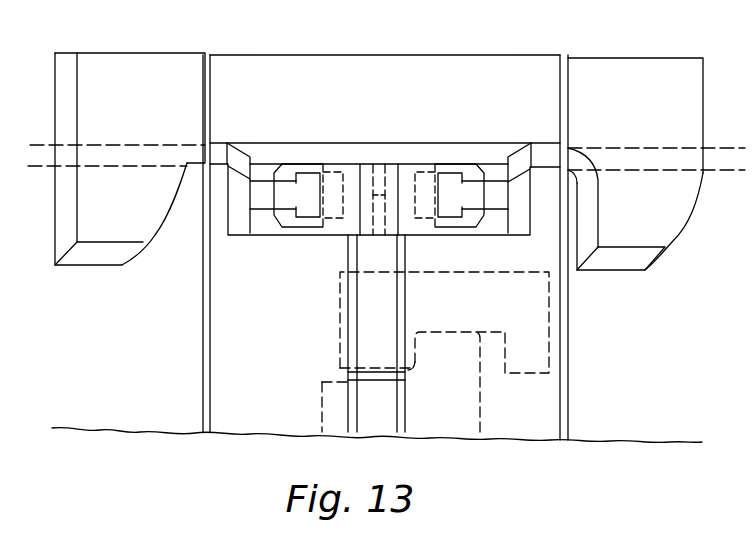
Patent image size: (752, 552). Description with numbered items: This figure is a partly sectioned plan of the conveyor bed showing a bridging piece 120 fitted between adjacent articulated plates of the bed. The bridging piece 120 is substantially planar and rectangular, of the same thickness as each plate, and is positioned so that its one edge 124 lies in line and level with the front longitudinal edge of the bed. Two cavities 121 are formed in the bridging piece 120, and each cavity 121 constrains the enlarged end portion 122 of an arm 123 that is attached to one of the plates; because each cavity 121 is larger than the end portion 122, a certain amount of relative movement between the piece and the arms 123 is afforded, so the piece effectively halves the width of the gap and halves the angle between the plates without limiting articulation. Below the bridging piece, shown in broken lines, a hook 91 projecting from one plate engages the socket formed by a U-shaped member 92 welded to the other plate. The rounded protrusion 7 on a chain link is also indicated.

The rounded protrusion 7 is at (157, 68).
The bridging piece 120 is at (352, 172).
The cavity 121 is at (332, 210).
The enlarged end portion 122 is at (307, 180).
The arm 123 is at (262, 185).
The edge 124 is at (360, 165).
The hook 91 is at (460, 383).
The U-shaped member 92 is at (549, 343).